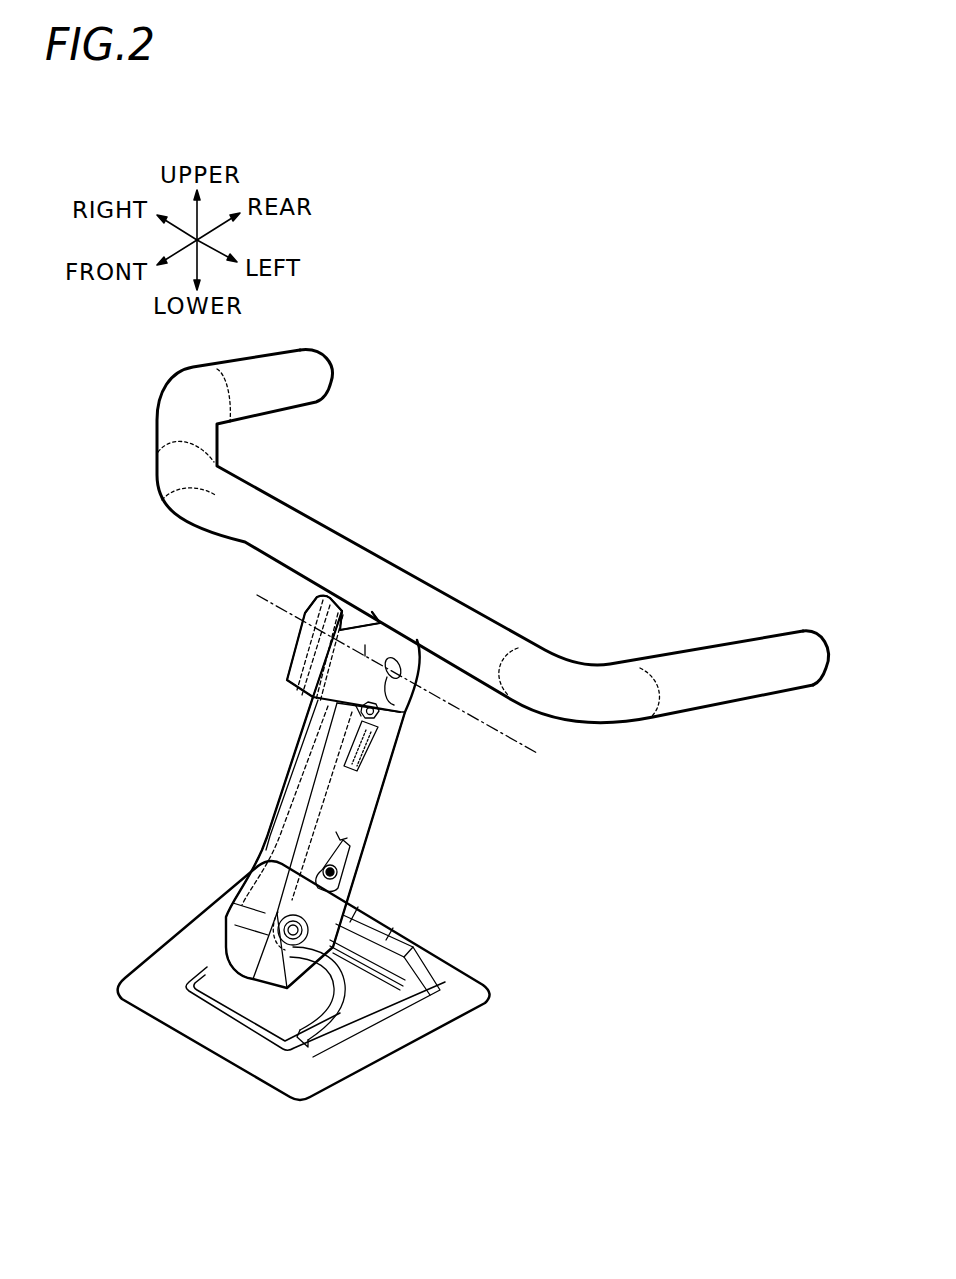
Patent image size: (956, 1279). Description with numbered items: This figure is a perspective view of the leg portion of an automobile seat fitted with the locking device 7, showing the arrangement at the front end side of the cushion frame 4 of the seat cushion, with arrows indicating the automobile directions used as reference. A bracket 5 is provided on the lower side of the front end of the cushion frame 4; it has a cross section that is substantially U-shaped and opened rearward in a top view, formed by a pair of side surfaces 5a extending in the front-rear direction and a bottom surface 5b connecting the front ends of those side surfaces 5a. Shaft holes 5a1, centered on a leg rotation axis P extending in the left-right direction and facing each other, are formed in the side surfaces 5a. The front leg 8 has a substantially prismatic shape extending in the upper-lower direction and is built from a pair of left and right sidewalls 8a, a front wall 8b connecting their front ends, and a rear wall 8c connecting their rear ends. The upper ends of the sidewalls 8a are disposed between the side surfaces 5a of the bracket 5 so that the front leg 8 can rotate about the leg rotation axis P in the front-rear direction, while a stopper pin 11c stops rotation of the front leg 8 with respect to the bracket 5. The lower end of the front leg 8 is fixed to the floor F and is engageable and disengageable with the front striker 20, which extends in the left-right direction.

The cushion frame 4 is at (587, 658).
The bracket 5 is at (345, 611).
The side surfaces 5a is at (308, 610).
The shaft holes 5a1 is at (395, 681).
The bottom surface 5b is at (310, 648).
The locking device 7 is at (207, 832).
The front leg 8 is at (340, 814).
The sidewalls 8a is at (357, 807).
The front wall 8b is at (300, 777).
The rear wall 8c is at (380, 753).
The stopper pin 11c is at (380, 715).
The front striker 20 is at (413, 940).
The leg rotation axis P is at (537, 753).
The floor F is at (228, 1040).